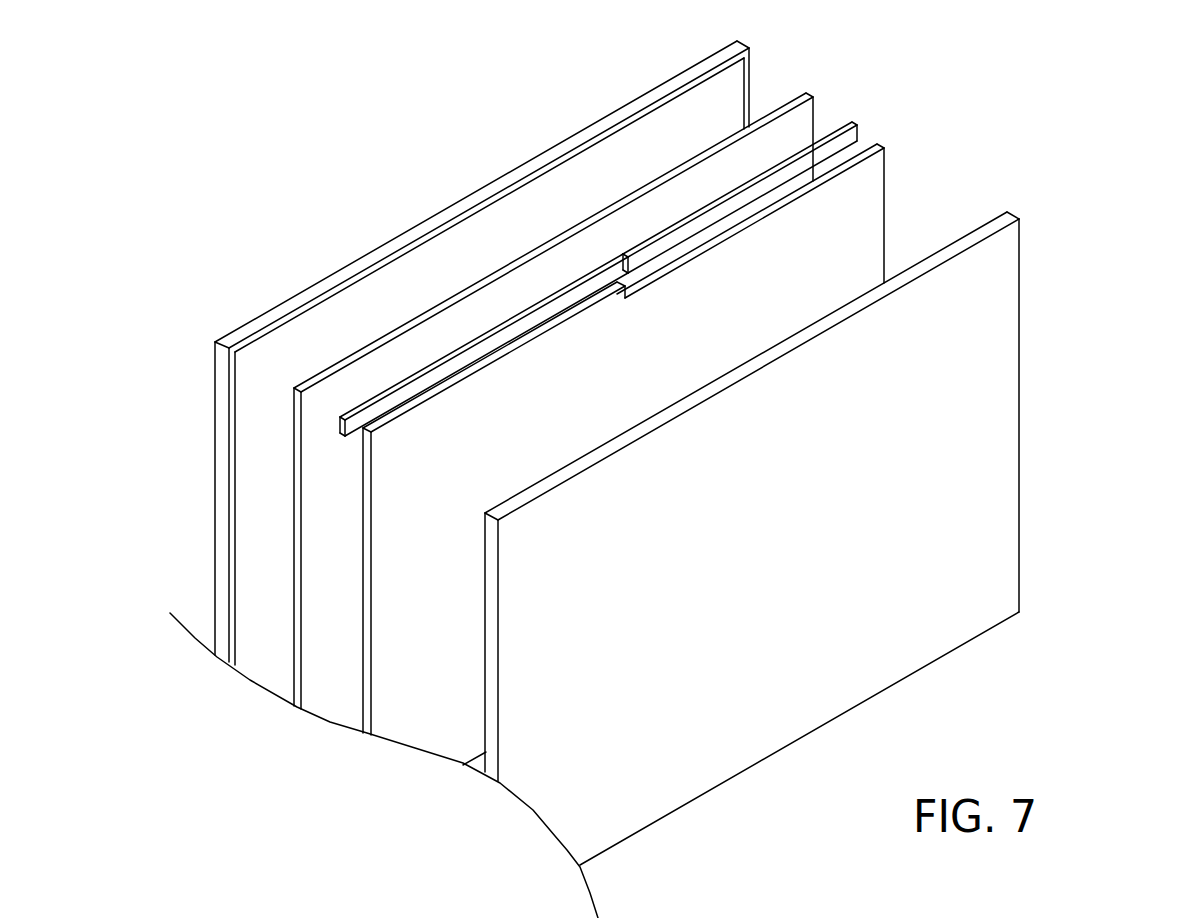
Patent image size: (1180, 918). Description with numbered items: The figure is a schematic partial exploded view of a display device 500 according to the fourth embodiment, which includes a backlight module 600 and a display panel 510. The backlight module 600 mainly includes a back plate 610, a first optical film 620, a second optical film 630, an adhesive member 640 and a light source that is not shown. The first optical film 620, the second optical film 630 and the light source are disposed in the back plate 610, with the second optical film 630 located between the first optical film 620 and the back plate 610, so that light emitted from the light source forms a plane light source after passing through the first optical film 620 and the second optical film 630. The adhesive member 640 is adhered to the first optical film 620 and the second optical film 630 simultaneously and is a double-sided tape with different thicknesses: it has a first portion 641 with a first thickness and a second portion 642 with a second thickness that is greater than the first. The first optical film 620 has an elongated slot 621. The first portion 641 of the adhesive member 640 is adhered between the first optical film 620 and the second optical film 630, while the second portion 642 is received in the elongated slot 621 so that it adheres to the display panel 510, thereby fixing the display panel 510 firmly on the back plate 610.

The display device 500 is at (213, 170).
The display panel 510 is at (988, 427).
The backlight module 600 is at (622, 382).
The back plate 610 is at (747, 48).
The first optical film 620 is at (867, 202).
The elongated slot 621 is at (743, 222).
The second optical film 630 is at (802, 120).
The adhesive member 640 is at (845, 137).
The first portion 641 is at (462, 357).
The second portion 642 is at (660, 247).